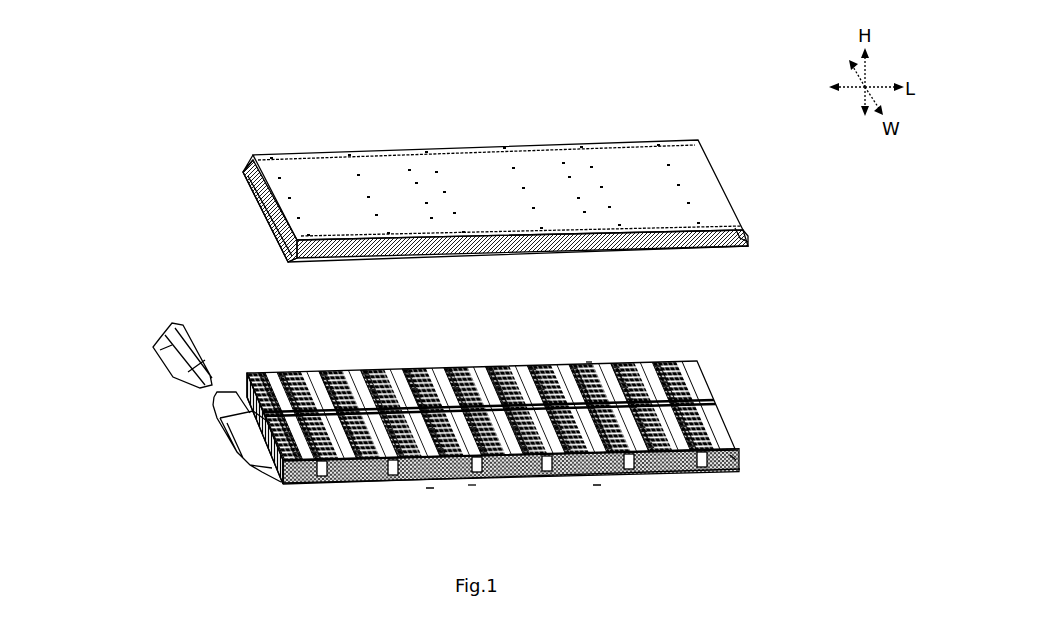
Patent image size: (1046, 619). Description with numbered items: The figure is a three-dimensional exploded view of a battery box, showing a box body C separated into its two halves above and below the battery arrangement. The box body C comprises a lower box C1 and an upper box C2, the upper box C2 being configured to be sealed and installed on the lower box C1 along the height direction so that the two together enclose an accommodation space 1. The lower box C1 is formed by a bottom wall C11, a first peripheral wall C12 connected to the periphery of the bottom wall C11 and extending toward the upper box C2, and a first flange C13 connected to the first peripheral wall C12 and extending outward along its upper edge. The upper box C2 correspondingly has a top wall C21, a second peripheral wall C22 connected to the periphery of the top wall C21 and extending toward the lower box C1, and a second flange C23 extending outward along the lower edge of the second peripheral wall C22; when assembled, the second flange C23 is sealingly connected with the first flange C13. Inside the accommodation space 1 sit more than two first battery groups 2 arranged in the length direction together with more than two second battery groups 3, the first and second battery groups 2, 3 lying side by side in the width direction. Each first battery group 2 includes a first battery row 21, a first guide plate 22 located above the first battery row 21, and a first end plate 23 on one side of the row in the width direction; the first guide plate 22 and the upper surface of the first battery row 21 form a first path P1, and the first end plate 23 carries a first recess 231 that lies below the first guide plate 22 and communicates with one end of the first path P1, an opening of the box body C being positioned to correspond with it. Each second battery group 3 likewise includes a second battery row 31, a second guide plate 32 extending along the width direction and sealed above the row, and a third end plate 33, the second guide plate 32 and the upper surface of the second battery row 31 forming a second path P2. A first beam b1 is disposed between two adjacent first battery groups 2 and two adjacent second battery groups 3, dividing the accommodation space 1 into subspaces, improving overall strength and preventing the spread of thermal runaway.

The accommodation space 1 is at (247, 380).
The first battery group 2 is at (876, 408).
The first battery row 21 is at (390, 492).
The first guide plate 22 is at (370, 488).
The first end plate 23 is at (747, 471).
The first recess 231 is at (707, 468).
The second battery group 3 is at (876, 538).
The second battery row 31 is at (665, 344).
The second guide plate 32 is at (433, 370).
The third end plate 33 is at (330, 367).
The first beam b1 is at (597, 487).
The first path P1 is at (733, 457).
The second path P2 is at (590, 362).
The box body C is at (90, 206).
The lower box C1 is at (200, 468).
The bottom wall C11 is at (300, 490).
The first peripheral wall C12 is at (472, 487).
The first flange C13 is at (237, 400).
The upper box C2 is at (488, 122).
The top wall C21 is at (378, 158).
The second peripheral wall C22 is at (757, 241).
The second flange C23 is at (256, 184).